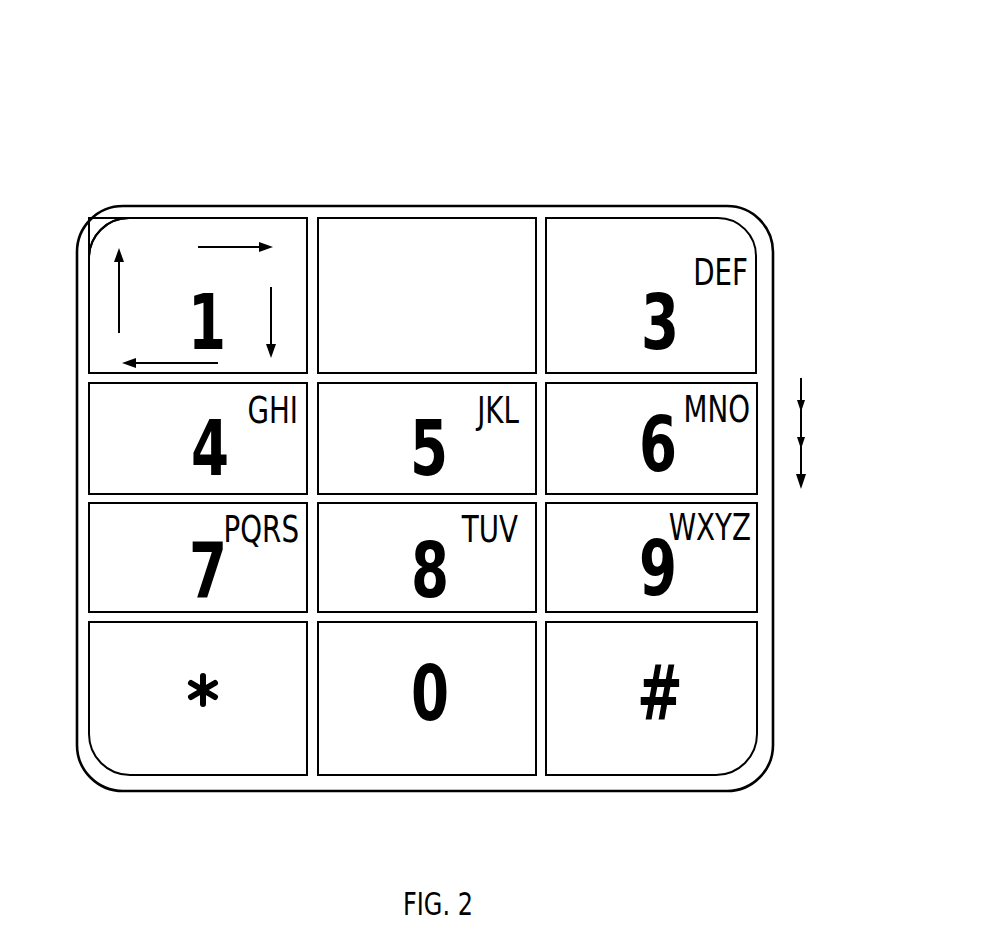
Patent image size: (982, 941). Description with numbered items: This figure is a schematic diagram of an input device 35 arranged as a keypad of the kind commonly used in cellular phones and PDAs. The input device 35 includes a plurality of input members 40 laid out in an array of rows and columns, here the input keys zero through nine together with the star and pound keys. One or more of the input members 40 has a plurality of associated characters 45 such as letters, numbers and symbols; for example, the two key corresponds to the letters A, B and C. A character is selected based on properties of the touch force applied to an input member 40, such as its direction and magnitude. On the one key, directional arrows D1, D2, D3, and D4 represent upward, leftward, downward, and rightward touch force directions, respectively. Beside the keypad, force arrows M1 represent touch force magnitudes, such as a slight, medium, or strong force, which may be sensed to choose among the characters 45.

The input device 35 is at (320, 158).
The input member 40 is at (417, 252).
The characters 45 is at (497, 252).
The directional arrow (upward direction) D1 is at (132, 290).
The directional arrow (leftward direction) D2 is at (170, 353).
The directional arrow (downward direction) D3 is at (286, 322).
The directional arrow (rightward direction) D4 is at (235, 258).
The force arrows M1 is at (808, 432).